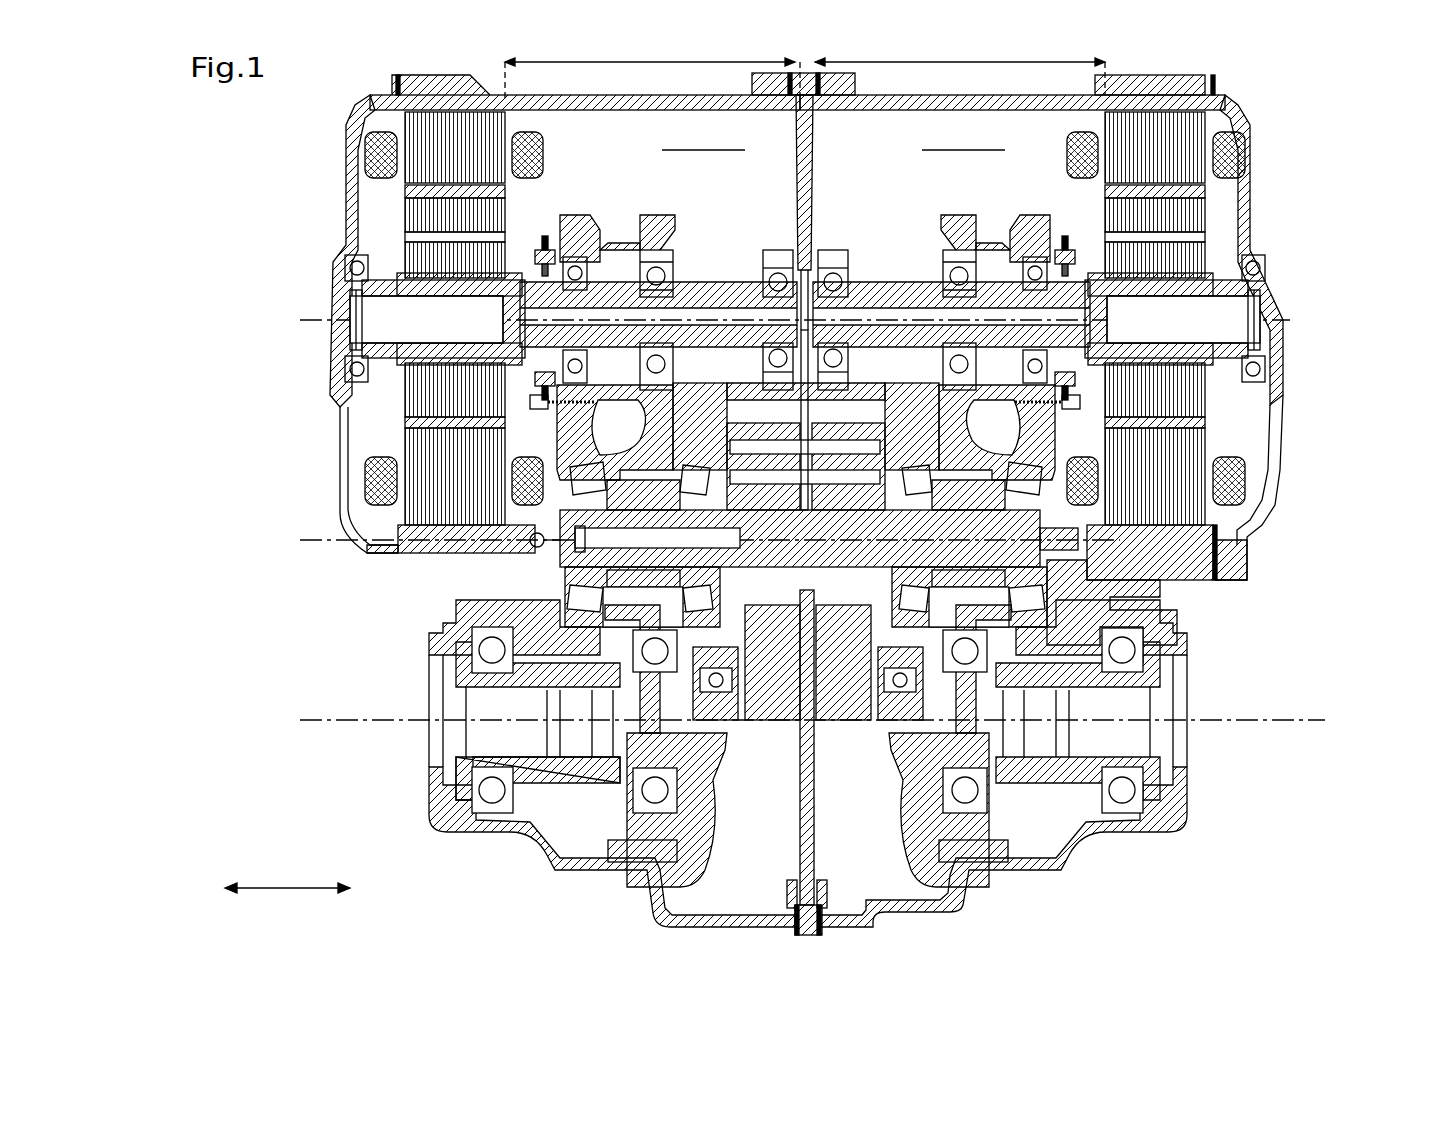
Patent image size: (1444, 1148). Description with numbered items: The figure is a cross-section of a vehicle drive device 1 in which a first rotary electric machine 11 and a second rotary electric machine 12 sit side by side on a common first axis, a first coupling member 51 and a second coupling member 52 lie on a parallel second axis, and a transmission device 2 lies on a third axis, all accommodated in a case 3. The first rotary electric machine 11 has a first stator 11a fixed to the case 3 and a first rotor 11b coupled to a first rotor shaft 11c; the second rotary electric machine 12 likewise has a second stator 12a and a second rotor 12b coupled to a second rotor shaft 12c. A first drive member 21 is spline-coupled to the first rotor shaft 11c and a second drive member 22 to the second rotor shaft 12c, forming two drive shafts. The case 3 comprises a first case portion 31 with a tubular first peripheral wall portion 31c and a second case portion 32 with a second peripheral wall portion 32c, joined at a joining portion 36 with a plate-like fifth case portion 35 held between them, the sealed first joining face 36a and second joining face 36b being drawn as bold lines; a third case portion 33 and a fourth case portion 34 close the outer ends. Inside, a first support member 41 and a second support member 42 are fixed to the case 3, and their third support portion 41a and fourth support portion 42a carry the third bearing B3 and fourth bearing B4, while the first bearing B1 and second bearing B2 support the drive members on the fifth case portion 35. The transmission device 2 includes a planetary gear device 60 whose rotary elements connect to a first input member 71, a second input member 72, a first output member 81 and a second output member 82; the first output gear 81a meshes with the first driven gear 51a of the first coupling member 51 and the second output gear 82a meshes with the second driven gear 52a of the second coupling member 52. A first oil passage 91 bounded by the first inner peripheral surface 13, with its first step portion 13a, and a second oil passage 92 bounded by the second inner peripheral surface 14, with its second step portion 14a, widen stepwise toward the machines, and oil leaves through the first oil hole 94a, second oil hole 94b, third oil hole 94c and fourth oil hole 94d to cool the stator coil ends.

The vehicle drive device 1 is at (225, 152).
The transmission device 2 is at (815, 690).
The case 3 is at (485, 98).
The first rotary electric machine 11 is at (1127, 194).
The first stator 11a is at (1105, 125).
The first rotor 11b is at (1210, 405).
The first rotor shaft 11c is at (1195, 285).
The second rotary electric machine 12 is at (484, 194).
The second stator 12a is at (505, 125).
The second rotor 12b is at (400, 405).
The second rotor shaft 12c is at (415, 285).
The first inner peripheral surface 13 is at (1221, 327).
The first step portion 13a is at (1125, 322).
The second inner peripheral surface 14 is at (391, 327).
The second step portion 14a is at (490, 322).
The first drive member 21 is at (860, 282).
The second drive member 22 is at (700, 282).
The first case portion 31 is at (1048, 878).
The first peripheral wall portion 31c is at (965, 108).
The second case portion 32 is at (560, 880).
The second peripheral wall portion 32c is at (655, 108).
The third case portion 33 is at (1262, 162).
The fourth case portion 34 is at (345, 145).
The fifth case portion 35 is at (812, 138).
The joining portion 36 is at (805, 934).
The first joining face 36a is at (822, 900).
The second joining face 36b is at (795, 892).
The first support member 41 is at (900, 818).
The third support portion 41a is at (1002, 250).
The second support member 42 is at (716, 818).
The fourth support portion 42a is at (607, 250).
The first coupling member 51 is at (1040, 773).
The first driven gear 51a is at (996, 852).
The second coupling member 52 is at (575, 773).
The second driven gear 52a is at (618, 850).
The planetary gear device 60 is at (895, 470).
The first input member 71 is at (878, 712).
The second input member 72 is at (735, 712).
The first output member 81 is at (992, 475).
The first output gear 81a is at (1110, 590).
The second output member 82 is at (620, 470).
The second output gear 82a is at (590, 595).
The first oil passage 91 is at (1240, 305).
The second oil passage 92 is at (370, 305).
The first oil hole 94a is at (1262, 268).
The second oil hole 94b is at (1095, 280).
The third oil hole 94c is at (348, 268).
The fourth oil hole 94d is at (515, 280).
The first bearing B1 is at (836, 272).
The second bearing B2 is at (778, 272).
The third bearing B3 is at (958, 268).
The fourth bearing B4 is at (655, 268).